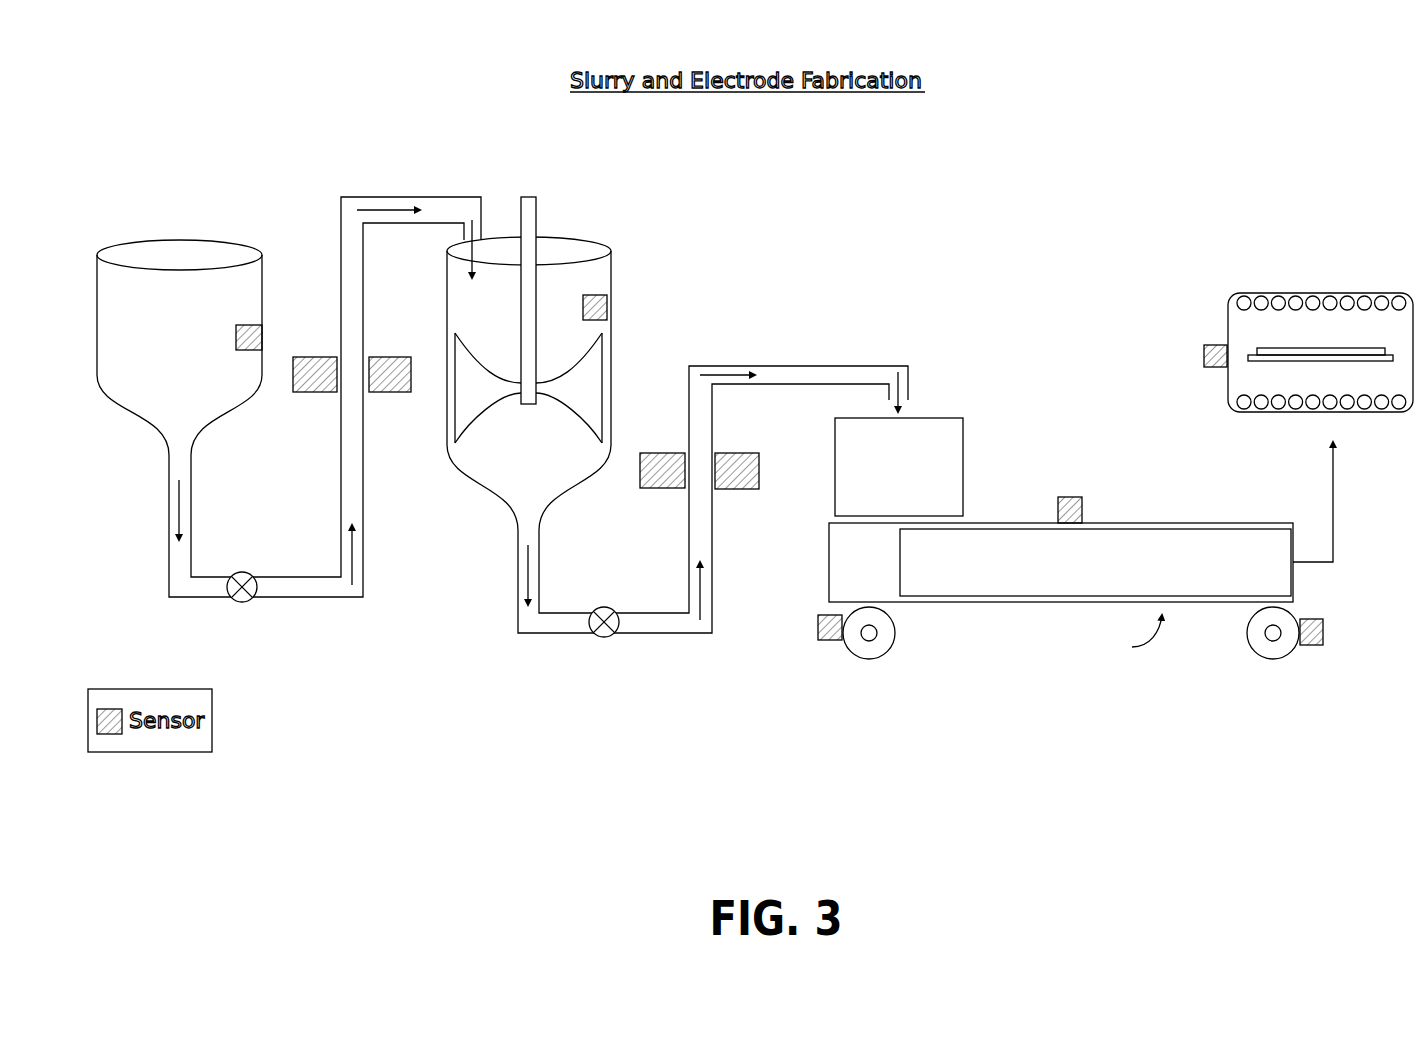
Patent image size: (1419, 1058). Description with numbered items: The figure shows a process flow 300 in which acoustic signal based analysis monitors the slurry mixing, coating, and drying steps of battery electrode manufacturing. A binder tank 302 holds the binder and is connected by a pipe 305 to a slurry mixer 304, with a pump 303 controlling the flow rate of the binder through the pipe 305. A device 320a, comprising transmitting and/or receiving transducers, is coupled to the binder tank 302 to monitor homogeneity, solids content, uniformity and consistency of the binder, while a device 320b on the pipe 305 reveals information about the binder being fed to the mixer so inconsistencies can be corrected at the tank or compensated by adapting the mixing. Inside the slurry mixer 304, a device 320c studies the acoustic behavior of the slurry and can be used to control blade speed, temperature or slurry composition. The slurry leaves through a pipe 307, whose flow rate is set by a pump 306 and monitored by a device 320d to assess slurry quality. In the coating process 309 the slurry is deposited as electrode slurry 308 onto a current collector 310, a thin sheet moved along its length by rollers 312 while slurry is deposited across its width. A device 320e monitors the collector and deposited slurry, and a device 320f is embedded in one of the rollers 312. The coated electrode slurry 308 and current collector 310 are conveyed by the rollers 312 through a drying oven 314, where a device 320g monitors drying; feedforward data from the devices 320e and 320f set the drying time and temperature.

The slurry and electrode fabrication system 300 is at (1170, 92).
The binder tank 302 is at (178, 282).
The pump 303 is at (242, 572).
The slurry mixer 304 is at (570, 278).
The pipe 305 is at (341, 460).
The pump 306 is at (604, 607).
The pipe 307 is at (812, 366).
The electrode slurry 308 is at (604, 362).
The coating process 309 is at (935, 418).
The current collector 310 is at (1137, 523).
The rollers 312 is at (870, 658).
The drying oven 314 is at (1235, 298).
The device 320a is at (249, 325).
The device 320b is at (313, 357).
The device 320c is at (607, 307).
The device 320d is at (661, 453).
The device 320e is at (1071, 497).
The device 320f is at (818, 630).
The device 320g is at (1200, 355).